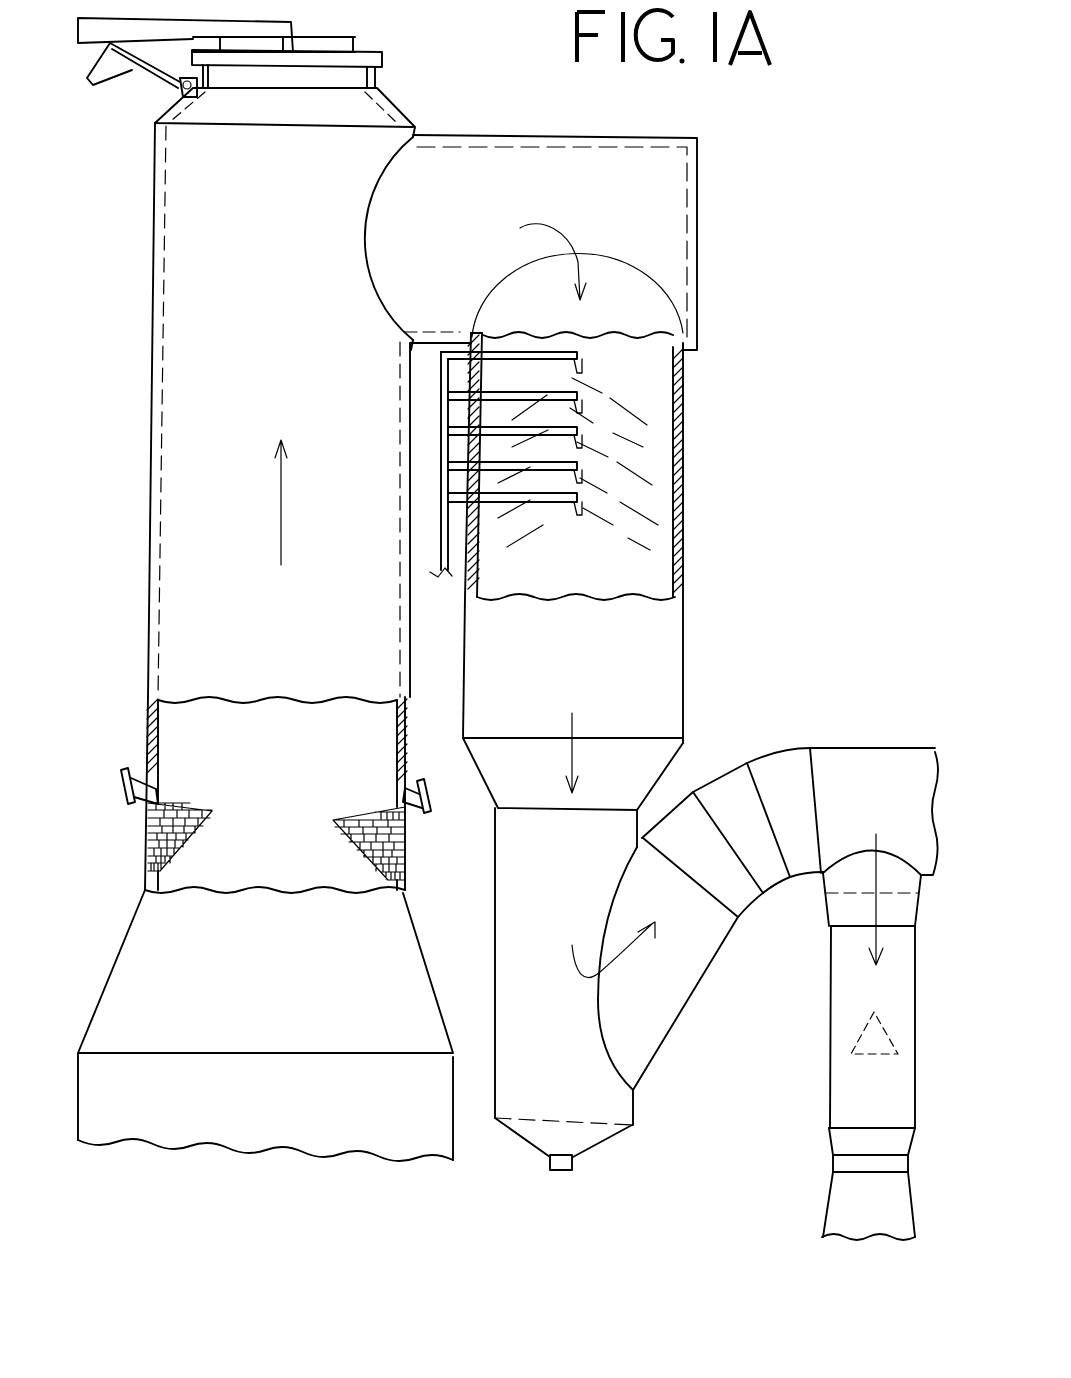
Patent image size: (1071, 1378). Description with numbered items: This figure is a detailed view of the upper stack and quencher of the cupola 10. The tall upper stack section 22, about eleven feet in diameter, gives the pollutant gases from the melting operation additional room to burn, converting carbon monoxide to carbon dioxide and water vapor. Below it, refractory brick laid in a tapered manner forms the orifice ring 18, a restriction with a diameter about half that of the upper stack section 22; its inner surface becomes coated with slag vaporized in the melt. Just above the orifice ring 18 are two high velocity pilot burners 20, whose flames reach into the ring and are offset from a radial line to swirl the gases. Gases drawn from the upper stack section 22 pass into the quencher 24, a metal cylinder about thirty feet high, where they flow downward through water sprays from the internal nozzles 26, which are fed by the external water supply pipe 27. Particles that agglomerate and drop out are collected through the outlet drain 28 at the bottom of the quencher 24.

The cupola 10 is at (453, 1080).
The orifice ring 18 is at (146, 823).
The pilot burners 20 is at (147, 777).
The upper stack section 22 is at (148, 487).
The quencher 24 is at (687, 497).
The internal nozzles 26 is at (583, 360).
The external water supply pipe 27 is at (440, 372).
The outlet drain 28 is at (573, 1162).